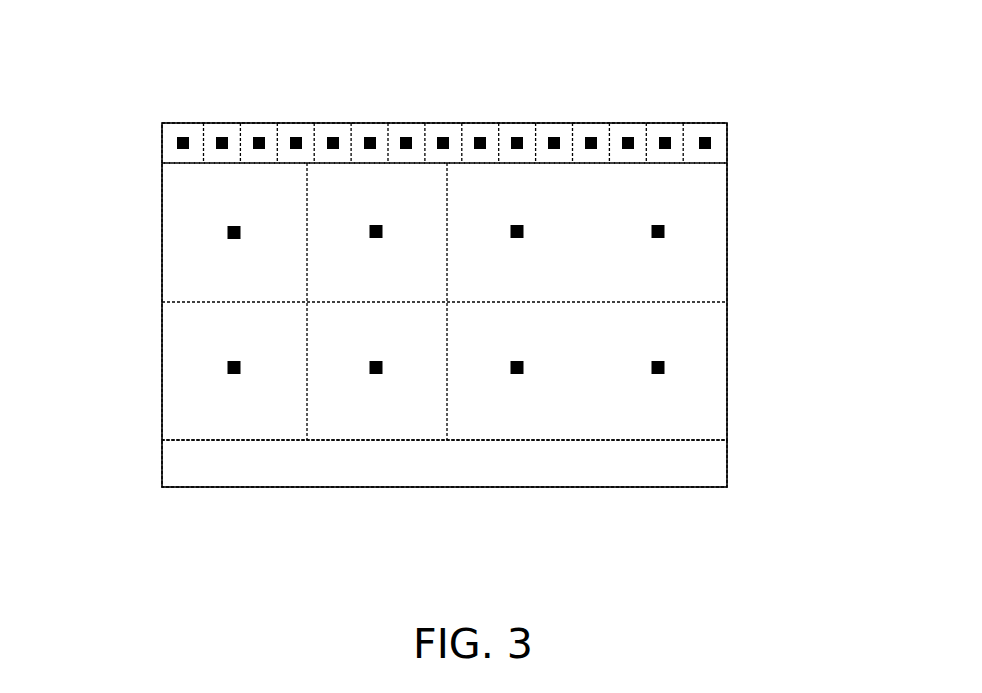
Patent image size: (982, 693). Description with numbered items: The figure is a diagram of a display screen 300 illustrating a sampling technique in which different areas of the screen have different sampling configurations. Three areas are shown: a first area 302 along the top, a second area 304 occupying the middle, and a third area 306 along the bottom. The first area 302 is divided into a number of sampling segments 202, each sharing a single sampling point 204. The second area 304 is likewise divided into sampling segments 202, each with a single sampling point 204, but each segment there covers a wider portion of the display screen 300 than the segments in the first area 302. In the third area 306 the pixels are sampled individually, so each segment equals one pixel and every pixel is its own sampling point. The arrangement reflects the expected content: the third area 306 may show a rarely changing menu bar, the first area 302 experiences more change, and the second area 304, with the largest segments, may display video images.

The display screen 300 is at (189, 88).
The first area 302 is at (738, 123).
The second area 304 is at (738, 163).
The third area 306 is at (738, 440).
The sampling segment 202 is at (478, 123).
The sampling point 204 is at (296, 135).